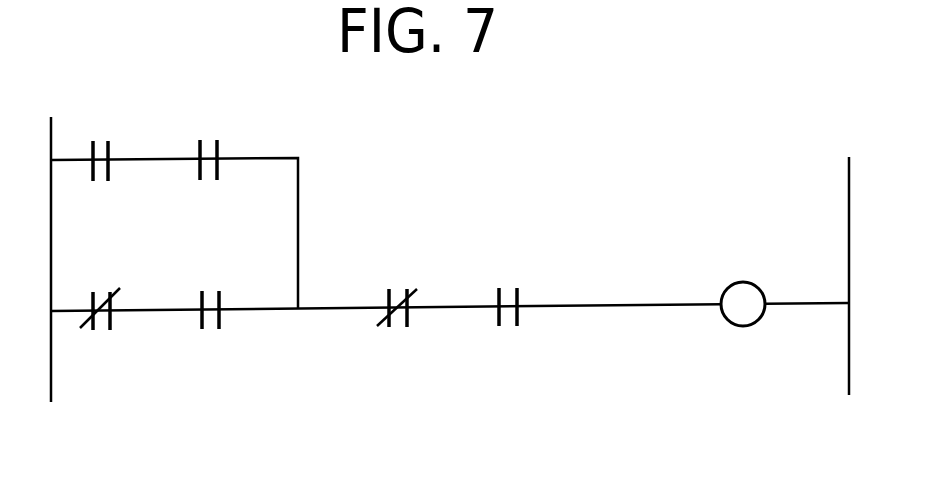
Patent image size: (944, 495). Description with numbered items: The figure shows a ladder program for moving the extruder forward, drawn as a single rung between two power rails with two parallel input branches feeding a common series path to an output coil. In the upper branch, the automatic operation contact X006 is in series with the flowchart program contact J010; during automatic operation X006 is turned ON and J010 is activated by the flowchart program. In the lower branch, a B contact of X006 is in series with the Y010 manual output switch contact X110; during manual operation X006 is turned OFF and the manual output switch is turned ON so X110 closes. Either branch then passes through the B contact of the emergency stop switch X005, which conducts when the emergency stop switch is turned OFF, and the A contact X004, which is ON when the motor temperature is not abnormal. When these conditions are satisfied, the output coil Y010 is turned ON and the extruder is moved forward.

The automatic operation contact X006 is at (114, 212).
The flowchart program contact J010 is at (225, 137).
The Y010 manual output switch contact X110 is at (222, 283).
The emergency stop switch contact X005 is at (403, 281).
The motor temperature contact X004 is at (527, 280).
The output coil for moving the extruder forward Y010 is at (744, 279).